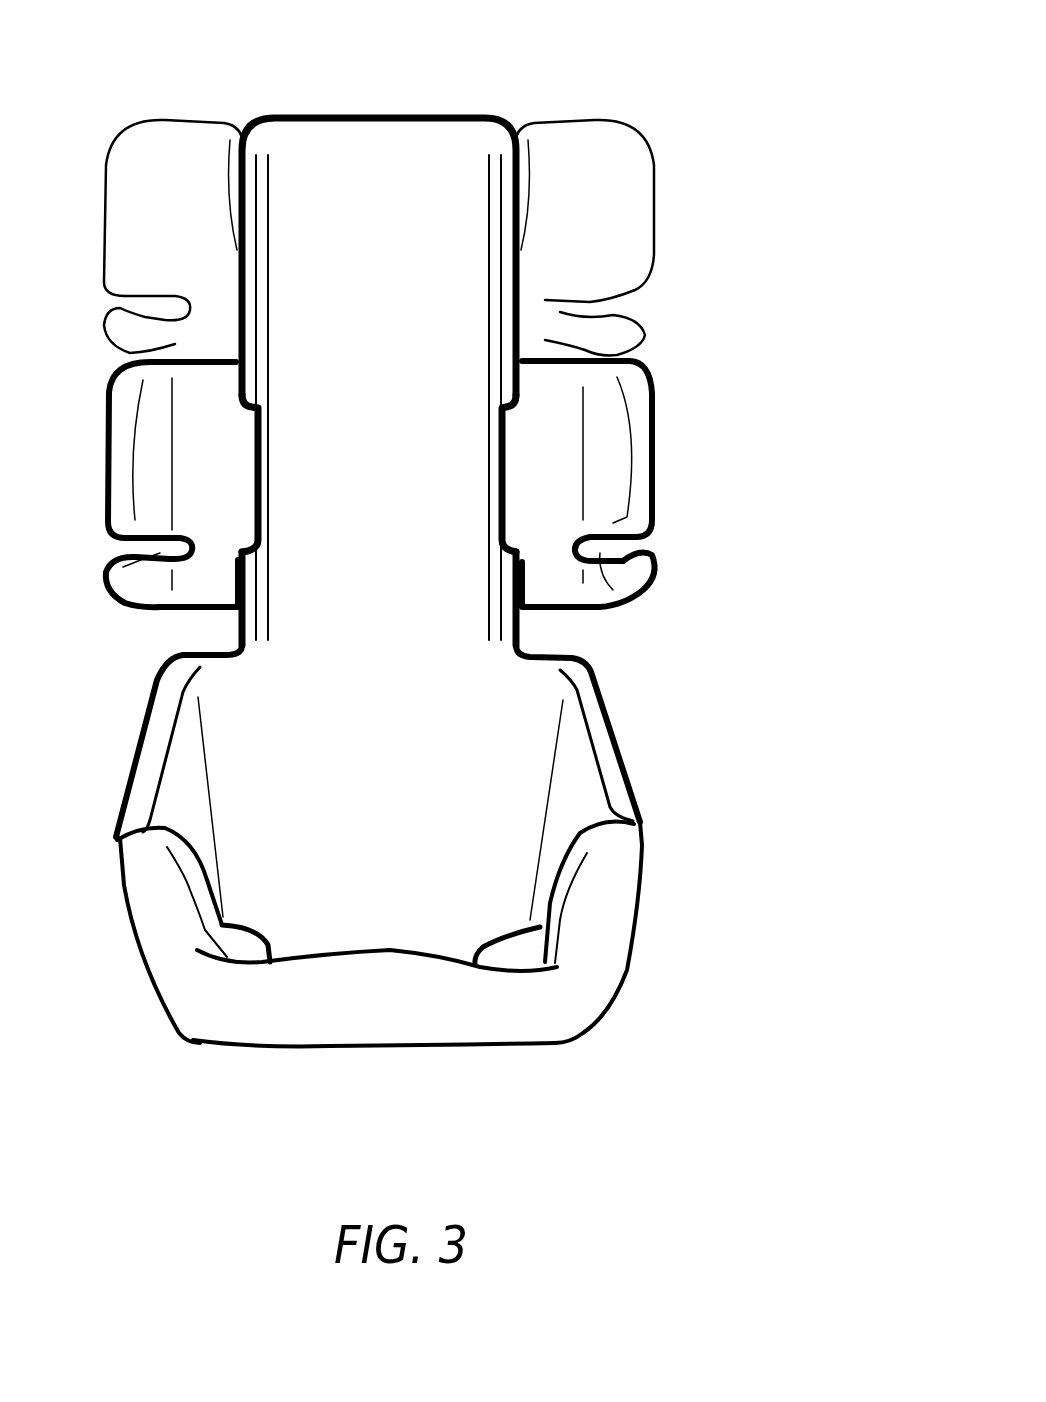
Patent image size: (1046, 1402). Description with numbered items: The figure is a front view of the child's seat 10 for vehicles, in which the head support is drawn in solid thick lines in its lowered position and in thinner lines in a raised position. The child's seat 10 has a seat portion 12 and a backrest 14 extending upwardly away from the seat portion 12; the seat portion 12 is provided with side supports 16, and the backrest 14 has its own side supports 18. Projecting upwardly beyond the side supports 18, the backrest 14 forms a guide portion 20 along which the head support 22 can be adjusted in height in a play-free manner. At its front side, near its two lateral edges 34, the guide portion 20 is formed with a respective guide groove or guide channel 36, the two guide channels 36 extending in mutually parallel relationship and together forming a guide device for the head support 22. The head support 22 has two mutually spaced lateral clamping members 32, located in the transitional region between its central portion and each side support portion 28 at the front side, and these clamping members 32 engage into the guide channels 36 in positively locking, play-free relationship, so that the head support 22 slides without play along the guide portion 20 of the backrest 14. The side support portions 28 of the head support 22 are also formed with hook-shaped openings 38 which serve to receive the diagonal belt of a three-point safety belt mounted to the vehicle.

The child's seat 10 is at (810, 218).
The seat portion 12 is at (391, 1020).
The backrest 14 is at (426, 700).
The side supports 16 is at (157, 933).
The side supports 18 is at (173, 783).
The guide portion 20 is at (422, 192).
The head support 22 is at (688, 435).
The side support portion 28 is at (143, 497).
The clamping members 32 is at (503, 480).
The lateral edges 34 is at (237, 253).
The guide channels 36 is at (255, 338).
The hook-shaped openings 38 is at (150, 575).